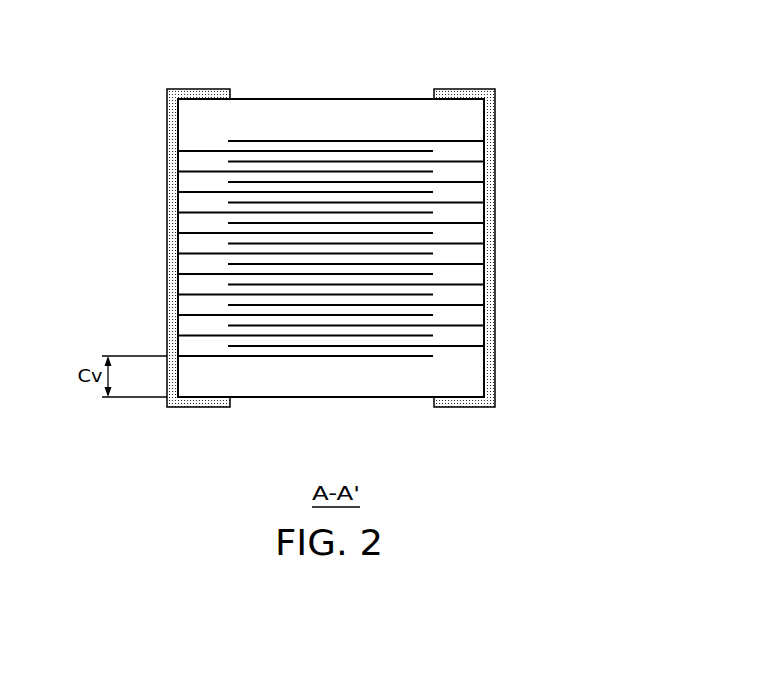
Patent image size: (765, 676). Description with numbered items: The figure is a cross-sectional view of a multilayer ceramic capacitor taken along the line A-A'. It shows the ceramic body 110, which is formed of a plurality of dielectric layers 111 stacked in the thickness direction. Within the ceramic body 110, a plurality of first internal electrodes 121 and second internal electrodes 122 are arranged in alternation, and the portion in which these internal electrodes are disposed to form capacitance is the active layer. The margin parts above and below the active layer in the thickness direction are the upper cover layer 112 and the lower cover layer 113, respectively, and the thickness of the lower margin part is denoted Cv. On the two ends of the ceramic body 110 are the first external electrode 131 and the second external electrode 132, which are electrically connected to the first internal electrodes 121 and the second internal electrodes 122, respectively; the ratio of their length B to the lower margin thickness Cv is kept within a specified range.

The ceramic body 110 is at (293, 94).
The dielectric layer 111 is at (465, 173).
The upper cover layer 112 is at (375, 110).
The lower cover layer 113 is at (335, 388).
The first internal electrode 121 is at (205, 212).
The second internal electrode 122 is at (461, 222).
The first external electrode 131 is at (167, 248).
The second external electrode 132 is at (490, 248).